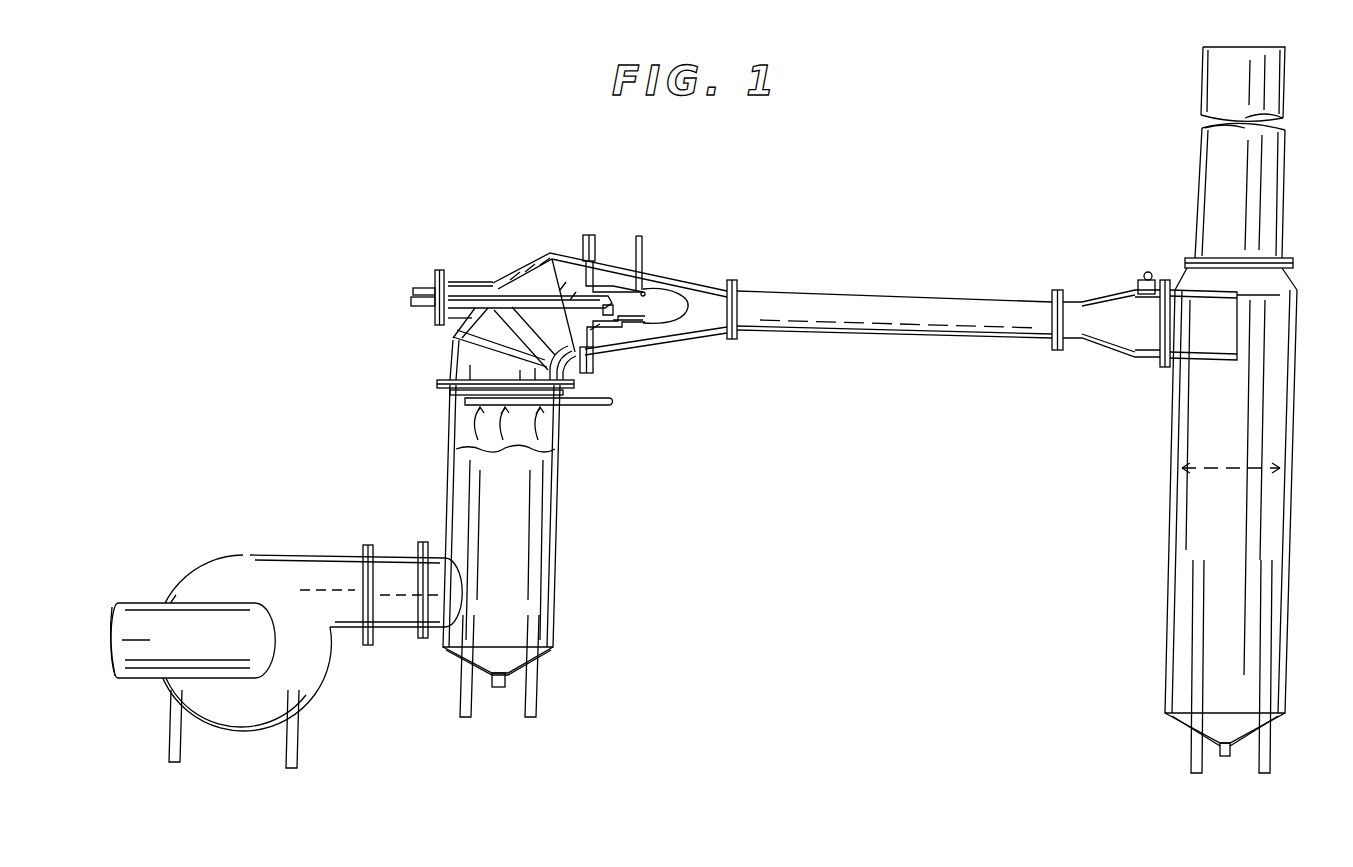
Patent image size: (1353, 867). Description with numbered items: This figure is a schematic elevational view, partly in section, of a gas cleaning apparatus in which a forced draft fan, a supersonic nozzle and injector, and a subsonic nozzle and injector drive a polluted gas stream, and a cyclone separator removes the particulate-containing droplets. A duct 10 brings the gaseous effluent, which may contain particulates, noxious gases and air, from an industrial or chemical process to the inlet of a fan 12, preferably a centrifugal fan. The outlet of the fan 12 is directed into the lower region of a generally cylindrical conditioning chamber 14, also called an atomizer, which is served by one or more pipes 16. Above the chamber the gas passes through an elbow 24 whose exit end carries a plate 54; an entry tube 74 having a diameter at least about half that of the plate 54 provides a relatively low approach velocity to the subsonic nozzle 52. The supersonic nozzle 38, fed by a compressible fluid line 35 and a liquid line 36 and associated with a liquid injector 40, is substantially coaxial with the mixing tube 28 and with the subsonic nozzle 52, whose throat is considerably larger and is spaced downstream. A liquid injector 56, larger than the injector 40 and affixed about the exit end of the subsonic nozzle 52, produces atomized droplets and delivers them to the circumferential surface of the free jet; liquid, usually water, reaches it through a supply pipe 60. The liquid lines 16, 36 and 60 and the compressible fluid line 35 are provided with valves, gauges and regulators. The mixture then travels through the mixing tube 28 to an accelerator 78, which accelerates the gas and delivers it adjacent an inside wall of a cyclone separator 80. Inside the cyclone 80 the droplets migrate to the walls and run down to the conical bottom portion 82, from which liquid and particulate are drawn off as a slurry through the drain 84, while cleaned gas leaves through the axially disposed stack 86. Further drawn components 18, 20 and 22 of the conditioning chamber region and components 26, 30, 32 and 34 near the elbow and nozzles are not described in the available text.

The duct 10 is at (135, 622).
The fan 12 is at (238, 560).
The conditioning chamber 14 is at (446, 478).
The pipes 16 is at (592, 407).
The air flow arrows 18 is at (509, 427).
The conical bottom 20 is at (515, 679).
The drain outlet 22 is at (495, 690).
The elbow 24 is at (515, 272).
The flange 26 is at (700, 284).
The mixing tube 28 is at (808, 295).
The lance pipe 30 is at (470, 282).
The duct 32 is at (462, 333).
The flange 34 is at (433, 326).
The compressible fluid line 35 is at (412, 304).
The liquid line 36 is at (415, 289).
The supersonic nozzle 38 is at (627, 340).
The liquid injector 40 is at (637, 236).
The subsonic nozzle 52 is at (637, 337).
The plate 54 is at (598, 328).
The liquid injector 56 is at (658, 286).
The supply pipe 60 is at (644, 247).
The entry tube 74 is at (638, 285).
The accelerator 78 is at (1111, 292).
The cyclone separator 80 is at (1172, 510).
The conical bottom portion 82 is at (1172, 718).
The drain 84 is at (1220, 758).
The stack 86 is at (1200, 204).